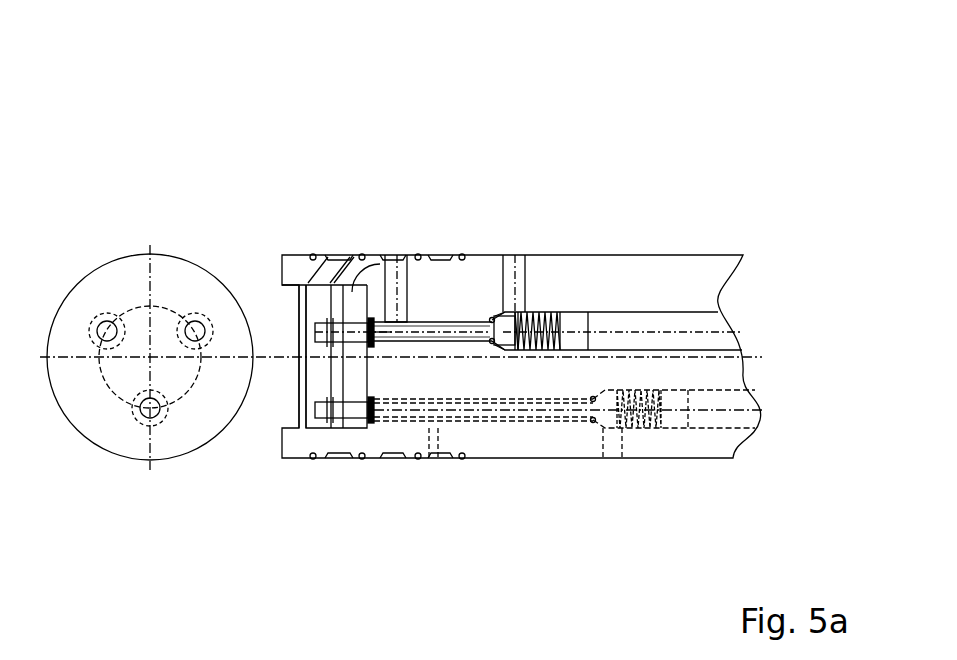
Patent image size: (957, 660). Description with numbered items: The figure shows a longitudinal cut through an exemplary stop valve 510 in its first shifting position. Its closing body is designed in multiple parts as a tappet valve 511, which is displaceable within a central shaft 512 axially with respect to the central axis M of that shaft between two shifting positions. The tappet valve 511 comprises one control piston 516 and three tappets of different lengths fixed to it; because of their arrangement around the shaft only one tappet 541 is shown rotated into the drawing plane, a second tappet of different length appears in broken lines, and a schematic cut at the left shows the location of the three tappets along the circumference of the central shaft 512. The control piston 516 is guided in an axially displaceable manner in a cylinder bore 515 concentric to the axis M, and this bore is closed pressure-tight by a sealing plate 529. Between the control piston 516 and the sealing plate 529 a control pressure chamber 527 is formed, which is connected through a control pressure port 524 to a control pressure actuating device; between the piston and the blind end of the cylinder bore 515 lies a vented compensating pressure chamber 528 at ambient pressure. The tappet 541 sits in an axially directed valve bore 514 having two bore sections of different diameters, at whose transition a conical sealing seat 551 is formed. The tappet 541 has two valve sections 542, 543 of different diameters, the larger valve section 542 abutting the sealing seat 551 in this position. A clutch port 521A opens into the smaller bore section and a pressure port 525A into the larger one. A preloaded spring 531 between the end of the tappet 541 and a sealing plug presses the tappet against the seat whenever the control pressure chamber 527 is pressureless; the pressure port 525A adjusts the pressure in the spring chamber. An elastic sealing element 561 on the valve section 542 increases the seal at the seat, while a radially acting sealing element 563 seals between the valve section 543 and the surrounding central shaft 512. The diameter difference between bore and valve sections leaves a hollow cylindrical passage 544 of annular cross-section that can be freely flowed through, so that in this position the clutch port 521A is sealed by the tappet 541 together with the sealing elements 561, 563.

The stop valve 510 is at (712, 233).
The tappet valve 511 is at (328, 373).
The central shaft 512 is at (660, 282).
The valve bore 514 is at (532, 310).
The cylinder bore 515 is at (394, 262).
The control piston 516 is at (338, 388).
The clutch port 521A is at (399, 270).
The control pressure port 524 is at (306, 285).
The pressure port 525A is at (496, 305).
The control pressure chamber 527 is at (313, 307).
The compensating pressure chamber 528 is at (353, 392).
The sealing plate 529 is at (300, 332).
The spring 531 is at (543, 310).
The tappet 541 is at (485, 306).
The valve section 542 is at (497, 345).
The valve section 543 is at (448, 342).
The hollow cylindrical passage 544 is at (424, 322).
The sealing seat 551 is at (476, 308).
The sealing element 561 is at (493, 342).
The sealing element 563 is at (397, 342).
The central axis M is at (752, 358).